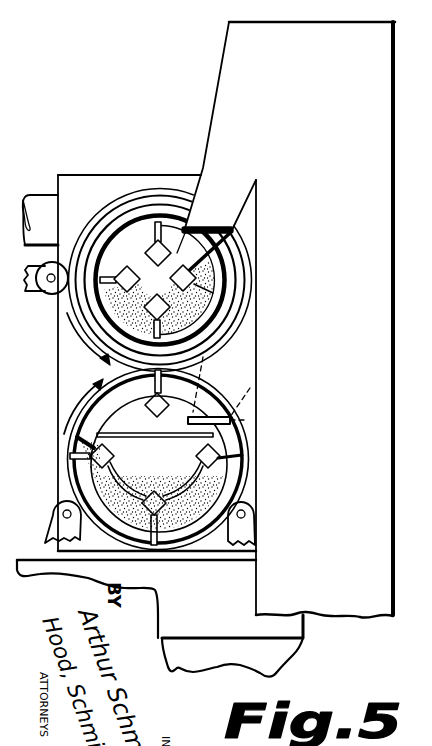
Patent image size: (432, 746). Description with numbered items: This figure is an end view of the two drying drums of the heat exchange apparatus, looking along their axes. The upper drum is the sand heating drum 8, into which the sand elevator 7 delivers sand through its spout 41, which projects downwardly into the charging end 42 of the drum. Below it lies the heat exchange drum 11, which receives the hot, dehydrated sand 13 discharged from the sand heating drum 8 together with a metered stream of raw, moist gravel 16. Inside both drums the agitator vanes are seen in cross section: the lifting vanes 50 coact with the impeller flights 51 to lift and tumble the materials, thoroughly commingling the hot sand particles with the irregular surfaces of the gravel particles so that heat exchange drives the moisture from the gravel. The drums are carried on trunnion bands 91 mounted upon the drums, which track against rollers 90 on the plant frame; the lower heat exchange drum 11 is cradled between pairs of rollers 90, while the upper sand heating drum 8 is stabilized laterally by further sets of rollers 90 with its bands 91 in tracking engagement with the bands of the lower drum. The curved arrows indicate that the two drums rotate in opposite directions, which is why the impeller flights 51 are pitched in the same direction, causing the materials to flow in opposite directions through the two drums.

The sand elevator 7 is at (340, 98).
The sand heating drum 8 is at (230, 284).
The heat exchange drum 11 is at (245, 433).
The hot, dehydrated sand 13 is at (219, 323).
The raw, moist gravel 16 is at (232, 494).
The spout 41 is at (185, 250).
The charging end 42 is at (228, 261).
The lifting vanes 50 is at (149, 254).
The impeller flights 51 is at (141, 279).
The rollers 90 is at (50, 297).
The trunnion bands 91 is at (147, 196).